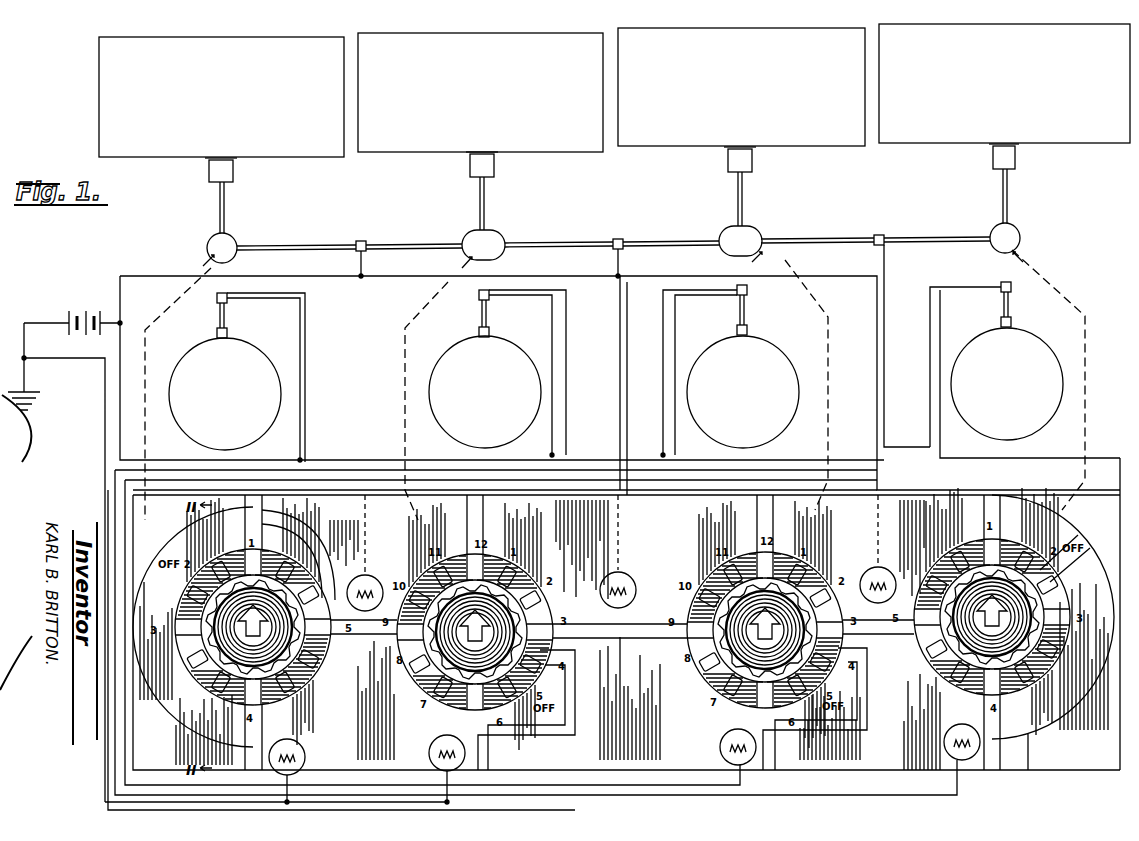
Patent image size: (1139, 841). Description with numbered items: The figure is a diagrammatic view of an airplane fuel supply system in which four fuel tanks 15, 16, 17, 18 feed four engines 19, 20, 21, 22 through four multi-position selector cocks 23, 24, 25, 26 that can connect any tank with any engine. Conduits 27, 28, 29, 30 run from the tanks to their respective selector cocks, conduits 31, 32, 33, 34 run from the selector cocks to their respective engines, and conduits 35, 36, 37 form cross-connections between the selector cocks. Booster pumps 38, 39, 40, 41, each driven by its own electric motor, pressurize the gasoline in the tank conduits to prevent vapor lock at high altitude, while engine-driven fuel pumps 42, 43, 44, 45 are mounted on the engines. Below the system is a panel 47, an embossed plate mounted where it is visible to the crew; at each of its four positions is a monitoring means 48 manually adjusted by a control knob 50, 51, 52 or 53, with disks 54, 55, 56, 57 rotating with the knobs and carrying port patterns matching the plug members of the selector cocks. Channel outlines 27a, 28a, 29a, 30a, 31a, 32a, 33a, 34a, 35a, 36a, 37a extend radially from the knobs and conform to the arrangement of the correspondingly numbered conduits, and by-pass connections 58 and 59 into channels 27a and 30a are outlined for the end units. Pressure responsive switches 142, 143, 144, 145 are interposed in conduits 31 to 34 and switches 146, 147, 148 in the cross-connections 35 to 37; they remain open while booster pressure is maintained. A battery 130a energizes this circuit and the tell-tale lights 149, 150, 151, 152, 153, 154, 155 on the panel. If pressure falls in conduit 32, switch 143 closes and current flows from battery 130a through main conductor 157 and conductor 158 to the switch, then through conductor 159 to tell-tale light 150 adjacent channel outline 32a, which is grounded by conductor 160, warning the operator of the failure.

The fuel tank 15 is at (318, 148).
The fuel tank 16 is at (585, 138).
The fuel tank 17 is at (850, 134).
The fuel tank 18 is at (1090, 133).
The engine 19 is at (205, 358).
The engine 20 is at (458, 353).
The engine 21 is at (720, 341).
The engine 22 is at (985, 346).
The selector cock 23 is at (237, 241).
The selector cock 24 is at (470, 237).
The selector cock 25 is at (735, 231).
The selector cock 26 is at (1000, 229).
The conduit 27 is at (218, 212).
The conduit 28 is at (480, 197).
The conduit 29 is at (742, 190).
The conduit 30 is at (1003, 186).
The channel outline 27a is at (264, 519).
The channel outline 28a is at (476, 514).
The channel outline 29a is at (775, 502).
The channel outline 30a is at (1000, 496).
The conduit 31 is at (226, 323).
The conduit 32 is at (482, 320).
The conduit 33 is at (745, 320).
The conduit 34 is at (1004, 305).
The channel outline 31a is at (262, 736).
The channel outline 32a is at (482, 762).
The channel outline 33a is at (768, 762).
The channel outline 34a is at (1000, 756).
The conduit 35 is at (328, 246).
The conduit 36 is at (582, 242).
The conduit 37 is at (840, 238).
The channel outline 35a is at (366, 630).
The channel outline 36a is at (610, 630).
The channel outline 37a is at (884, 624).
The booster pump 38 is at (233, 172).
The booster pump 39 is at (470, 170).
The booster pump 40 is at (752, 163).
The booster pump 41 is at (993, 160).
The fuel pump 42 is at (228, 336).
The fuel pump 43 is at (490, 333).
The fuel pump 44 is at (737, 328).
The fuel pump 45 is at (1012, 325).
The panel 47 is at (690, 502).
The monitoring means 48 is at (226, 615).
The control knob 50 is at (240, 648).
The control knob 51 is at (470, 660).
The control knob 52 is at (745, 648).
The control knob 53 is at (975, 660).
The disk 54 is at (227, 551).
The disk 55 is at (505, 556).
The disk 56 is at (781, 544).
The disk 57 is at (963, 545).
The by-pass connection 58 is at (344, 551).
The by-pass connection 59 is at (1047, 559).
The battery 130a is at (96, 312).
The pressure responsive switch 142 is at (228, 293).
The pressure responsive switch 143 is at (492, 292).
The pressure responsive switch 144 is at (748, 292).
The pressure responsive switch 145 is at (1000, 285).
The pressure responsive switch 146 is at (364, 241).
The pressure responsive switch 147 is at (622, 240).
The pressure responsive switch 148 is at (881, 236).
The tell-tale light 149 is at (305, 758).
The tell-tale light 150 is at (458, 736).
The tell-tale light 151 is at (720, 752).
The tell-tale light 152 is at (964, 724).
The tell-tale light 153 is at (372, 584).
The tell-tale light 154 is at (630, 582).
The tell-tale light 155 is at (888, 577).
The main conductor 157 is at (327, 460).
The conductor 158 is at (568, 352).
The conductor 159 is at (570, 386).
The conductor 160 is at (152, 798).